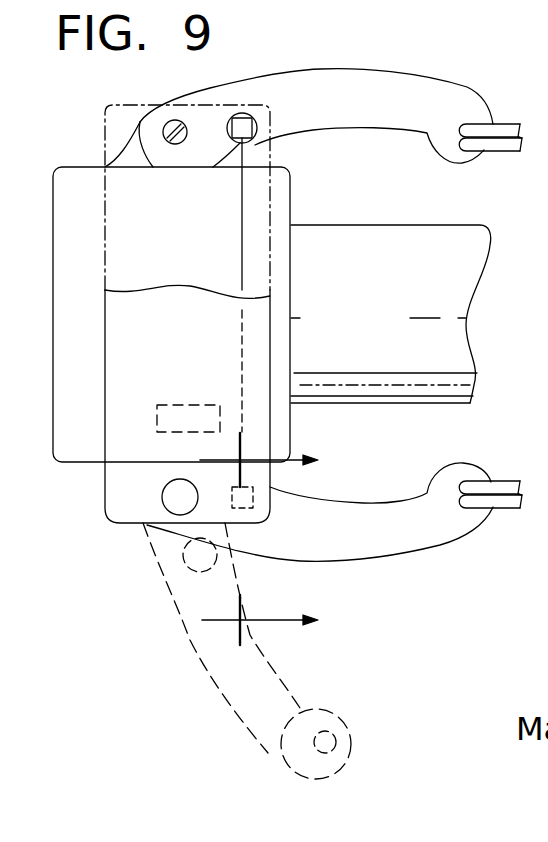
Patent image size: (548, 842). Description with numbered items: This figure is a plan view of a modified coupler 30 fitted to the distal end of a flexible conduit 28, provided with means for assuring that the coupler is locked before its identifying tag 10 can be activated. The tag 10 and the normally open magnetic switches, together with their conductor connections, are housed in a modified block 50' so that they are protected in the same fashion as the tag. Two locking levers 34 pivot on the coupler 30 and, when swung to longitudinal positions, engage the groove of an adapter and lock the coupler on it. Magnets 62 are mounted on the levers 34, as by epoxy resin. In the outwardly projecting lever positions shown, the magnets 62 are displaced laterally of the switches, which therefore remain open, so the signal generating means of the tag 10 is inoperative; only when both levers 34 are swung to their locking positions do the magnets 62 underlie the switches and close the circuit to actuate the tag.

The tag 10 is at (185, 405).
The flexible conduit 28 is at (387, 225).
The coupler 30 is at (68, 166).
The locking lever 34 is at (405, 72).
The modified block 50' is at (234, 314).
The magnet 62 is at (243, 113).